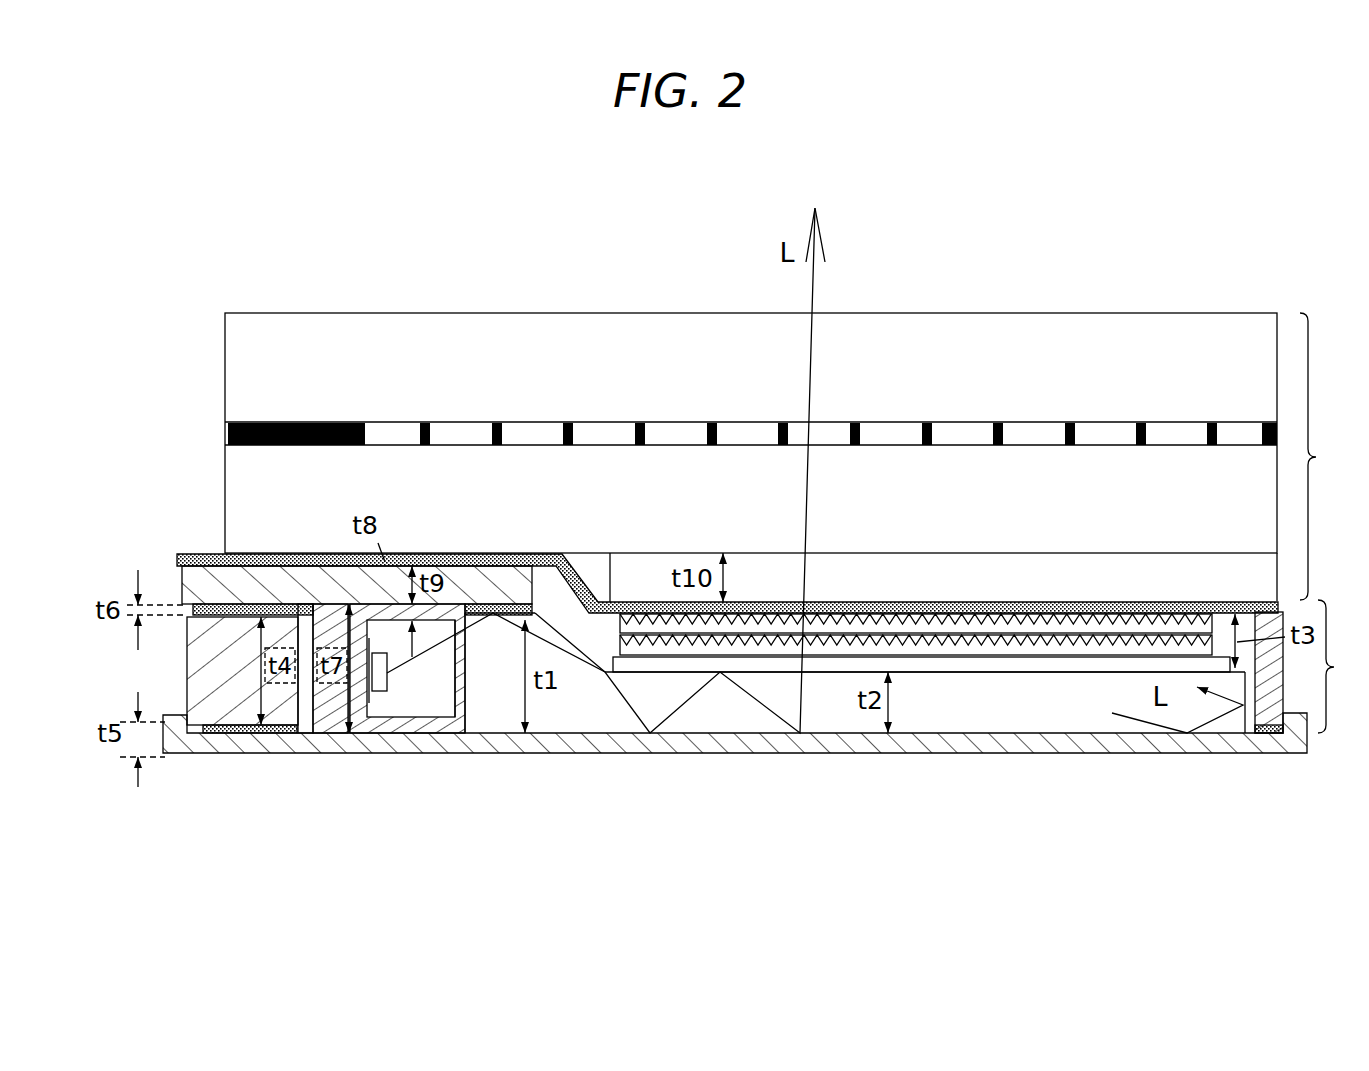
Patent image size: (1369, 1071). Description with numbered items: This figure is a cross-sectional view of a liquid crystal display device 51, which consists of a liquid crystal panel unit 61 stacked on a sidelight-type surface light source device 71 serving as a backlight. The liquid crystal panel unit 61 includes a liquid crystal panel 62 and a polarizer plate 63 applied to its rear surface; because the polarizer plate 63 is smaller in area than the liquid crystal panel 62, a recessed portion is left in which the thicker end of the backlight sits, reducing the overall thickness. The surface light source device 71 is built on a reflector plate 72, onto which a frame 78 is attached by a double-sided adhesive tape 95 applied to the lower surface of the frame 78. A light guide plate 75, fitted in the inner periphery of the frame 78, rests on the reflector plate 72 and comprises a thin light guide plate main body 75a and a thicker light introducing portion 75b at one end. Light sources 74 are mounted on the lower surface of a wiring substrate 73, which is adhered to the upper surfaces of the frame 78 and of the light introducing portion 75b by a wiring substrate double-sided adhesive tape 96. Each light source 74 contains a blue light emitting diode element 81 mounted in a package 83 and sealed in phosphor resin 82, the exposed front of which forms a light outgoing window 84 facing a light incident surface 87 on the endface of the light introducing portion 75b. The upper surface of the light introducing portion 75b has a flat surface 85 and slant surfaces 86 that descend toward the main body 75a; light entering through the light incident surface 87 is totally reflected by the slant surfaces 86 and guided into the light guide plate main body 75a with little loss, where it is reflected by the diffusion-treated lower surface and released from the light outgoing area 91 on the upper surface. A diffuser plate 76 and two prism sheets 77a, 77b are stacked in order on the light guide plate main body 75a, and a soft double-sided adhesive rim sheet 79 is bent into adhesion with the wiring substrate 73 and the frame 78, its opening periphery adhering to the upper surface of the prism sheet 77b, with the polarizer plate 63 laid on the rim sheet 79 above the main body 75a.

The liquid crystal display device 51 is at (1108, 247).
The liquid crystal panel unit 61 is at (1328, 456).
The liquid crystal panel 62 is at (1035, 365).
The polarizer plate 63 is at (1130, 580).
The surface light source device 71 is at (1312, 666).
The reflector plate 72 is at (853, 740).
The wiring substrate 73 is at (255, 582).
The light source 74 is at (333, 718).
The light guide plate 75 is at (747, 840).
The light guide plate main body 75a is at (730, 715).
The light introducing portion 75b is at (563, 708).
The diffuser plate 76 is at (907, 667).
The prism sheet 77a is at (942, 652).
The prism sheet 77b is at (995, 630).
The frame 78 is at (230, 660).
The rim sheet 79 is at (268, 553).
The blue light emitting diode element 81 is at (380, 735).
The phosphor resin 82 is at (413, 700).
The package 83 is at (313, 733).
The light outgoing window 84 is at (481, 732).
The flat surface 85 is at (512, 606).
The slant surface 86 is at (558, 631).
The light incident surface 87 is at (511, 731).
The light outgoing area 91 is at (833, 672).
The double-sided adhesive tape 95 is at (207, 735).
The wiring substrate double-sided adhesive tape 96 is at (477, 606).